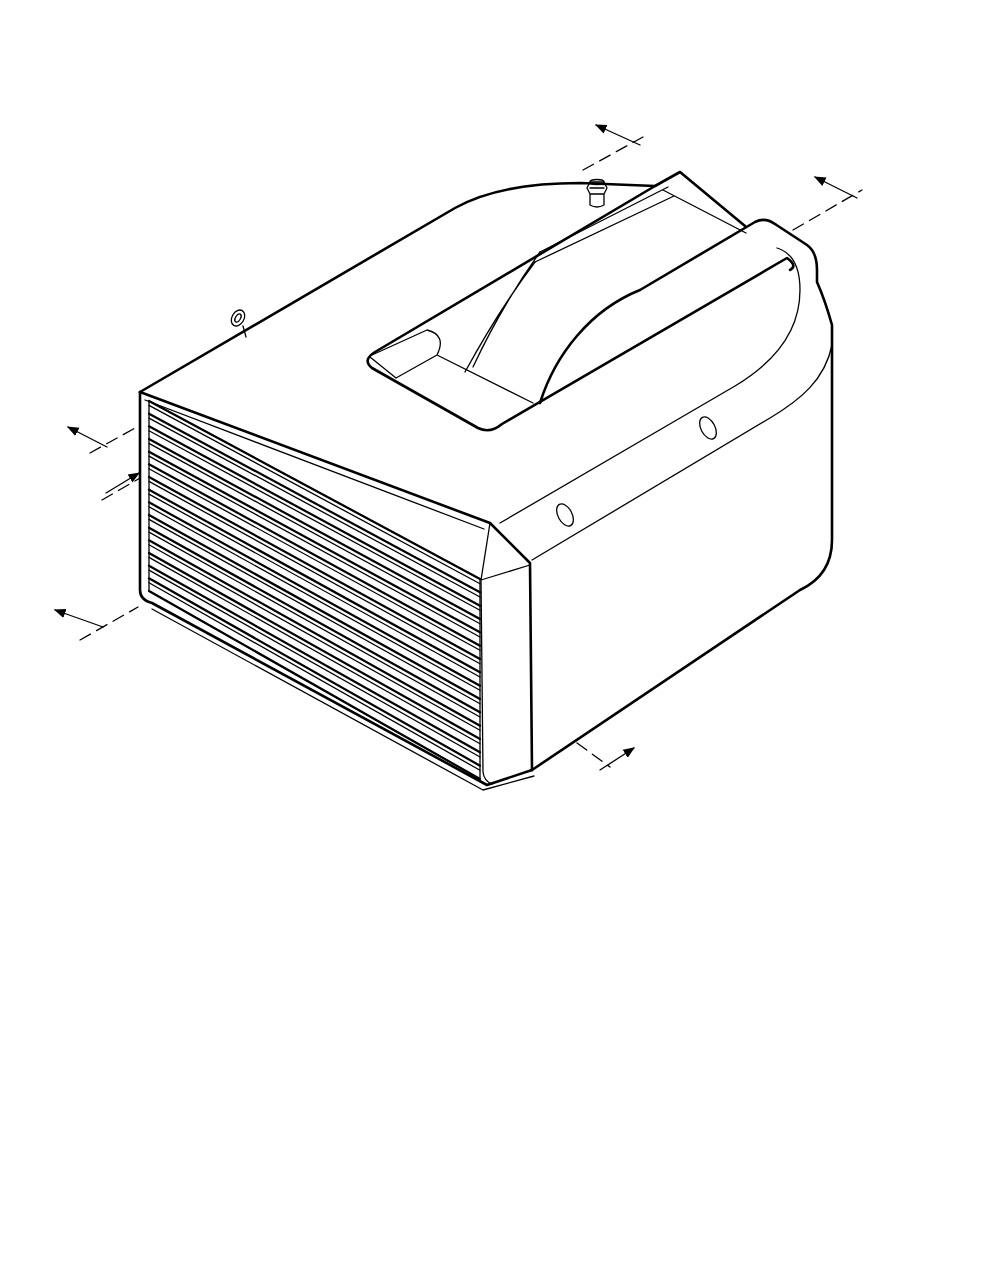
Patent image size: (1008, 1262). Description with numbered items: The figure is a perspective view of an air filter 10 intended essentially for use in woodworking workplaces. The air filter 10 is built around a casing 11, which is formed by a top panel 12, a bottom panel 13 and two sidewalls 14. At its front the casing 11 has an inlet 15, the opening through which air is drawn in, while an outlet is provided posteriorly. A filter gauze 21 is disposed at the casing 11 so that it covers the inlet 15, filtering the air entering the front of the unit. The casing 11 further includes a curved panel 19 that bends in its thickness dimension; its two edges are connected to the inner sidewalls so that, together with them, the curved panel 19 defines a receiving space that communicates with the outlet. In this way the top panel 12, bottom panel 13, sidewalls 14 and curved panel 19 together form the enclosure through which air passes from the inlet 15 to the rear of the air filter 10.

The air filter 10 is at (307, 160).
The casing 11 is at (416, 218).
The top panel 12 is at (503, 227).
The bottom panel 13 is at (433, 763).
The sidewall 14 is at (703, 610).
The inlet 15 is at (306, 590).
The curved panel 19 is at (548, 320).
The filter gauze 21 is at (245, 597).